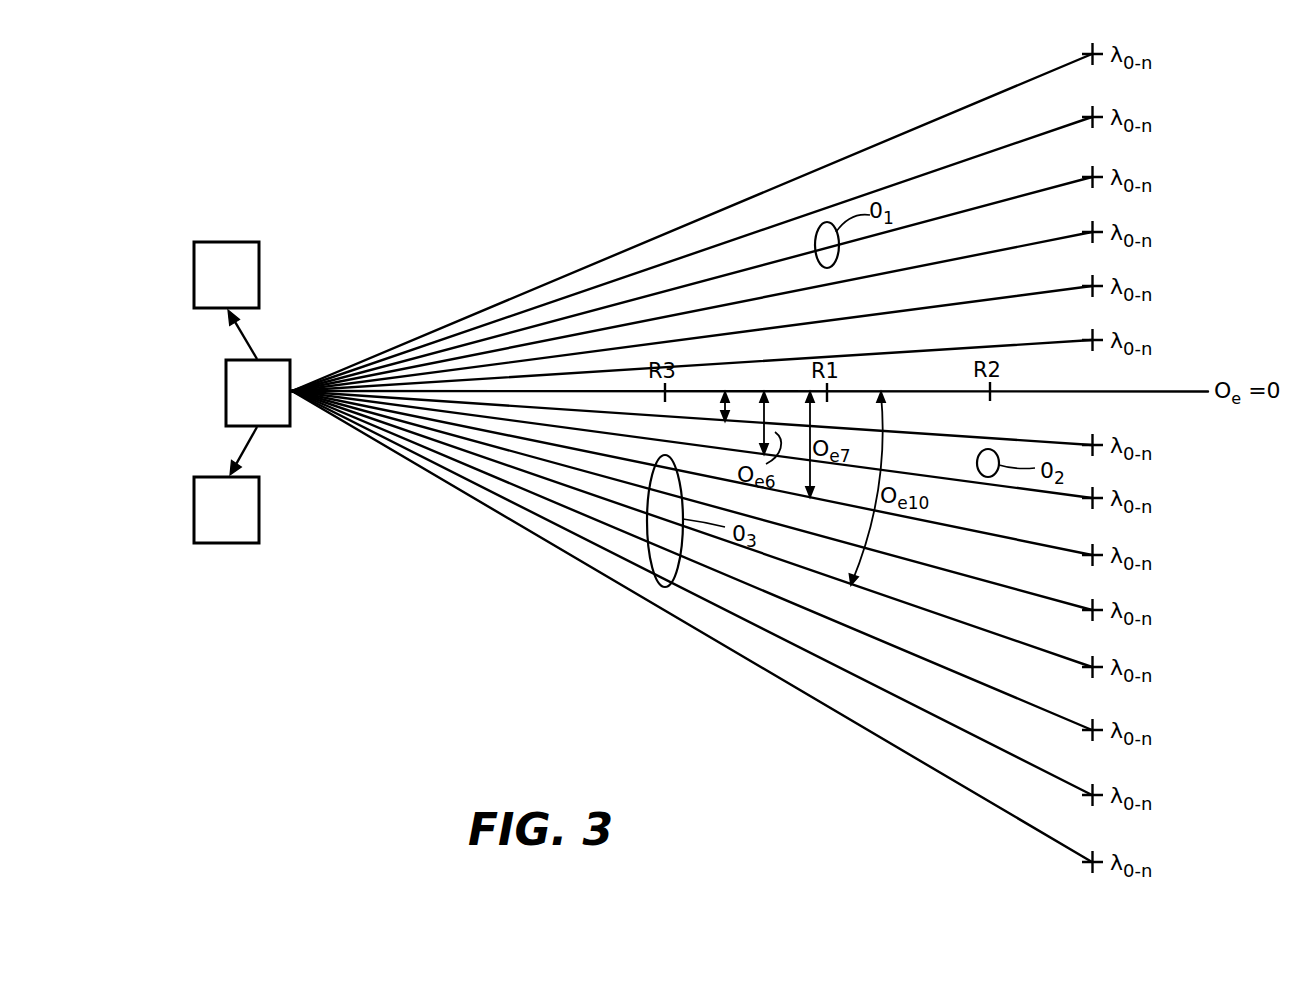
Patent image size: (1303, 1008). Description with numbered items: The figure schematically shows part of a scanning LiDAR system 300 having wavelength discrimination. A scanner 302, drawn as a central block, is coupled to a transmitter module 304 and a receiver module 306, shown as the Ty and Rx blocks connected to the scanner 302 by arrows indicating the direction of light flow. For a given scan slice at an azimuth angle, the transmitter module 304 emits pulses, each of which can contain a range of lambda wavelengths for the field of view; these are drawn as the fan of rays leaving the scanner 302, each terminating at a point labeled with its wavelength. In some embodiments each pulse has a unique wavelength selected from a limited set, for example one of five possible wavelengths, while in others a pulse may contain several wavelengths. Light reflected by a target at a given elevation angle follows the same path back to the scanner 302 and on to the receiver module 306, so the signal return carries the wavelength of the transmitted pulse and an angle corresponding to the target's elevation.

The scanning LiDAR system 300 is at (404, 165).
The scanner 302 is at (226, 390).
The transmitter module 304 is at (235, 544).
The receiver module 306 is at (228, 242).